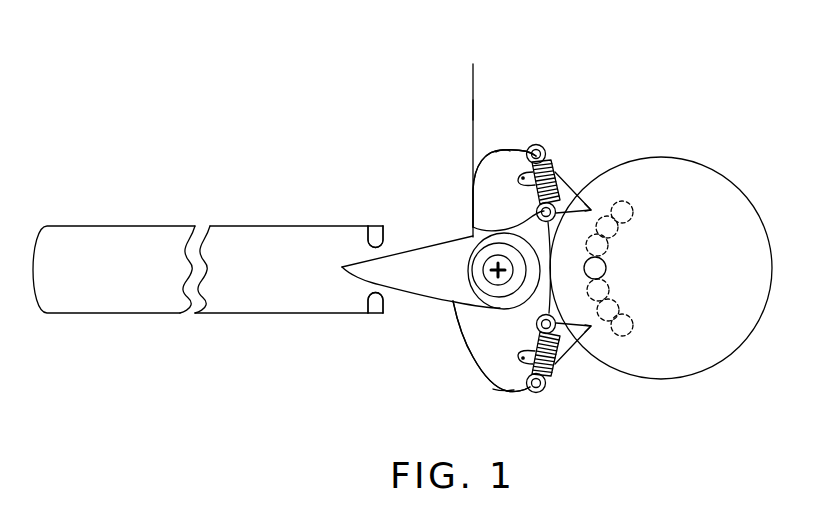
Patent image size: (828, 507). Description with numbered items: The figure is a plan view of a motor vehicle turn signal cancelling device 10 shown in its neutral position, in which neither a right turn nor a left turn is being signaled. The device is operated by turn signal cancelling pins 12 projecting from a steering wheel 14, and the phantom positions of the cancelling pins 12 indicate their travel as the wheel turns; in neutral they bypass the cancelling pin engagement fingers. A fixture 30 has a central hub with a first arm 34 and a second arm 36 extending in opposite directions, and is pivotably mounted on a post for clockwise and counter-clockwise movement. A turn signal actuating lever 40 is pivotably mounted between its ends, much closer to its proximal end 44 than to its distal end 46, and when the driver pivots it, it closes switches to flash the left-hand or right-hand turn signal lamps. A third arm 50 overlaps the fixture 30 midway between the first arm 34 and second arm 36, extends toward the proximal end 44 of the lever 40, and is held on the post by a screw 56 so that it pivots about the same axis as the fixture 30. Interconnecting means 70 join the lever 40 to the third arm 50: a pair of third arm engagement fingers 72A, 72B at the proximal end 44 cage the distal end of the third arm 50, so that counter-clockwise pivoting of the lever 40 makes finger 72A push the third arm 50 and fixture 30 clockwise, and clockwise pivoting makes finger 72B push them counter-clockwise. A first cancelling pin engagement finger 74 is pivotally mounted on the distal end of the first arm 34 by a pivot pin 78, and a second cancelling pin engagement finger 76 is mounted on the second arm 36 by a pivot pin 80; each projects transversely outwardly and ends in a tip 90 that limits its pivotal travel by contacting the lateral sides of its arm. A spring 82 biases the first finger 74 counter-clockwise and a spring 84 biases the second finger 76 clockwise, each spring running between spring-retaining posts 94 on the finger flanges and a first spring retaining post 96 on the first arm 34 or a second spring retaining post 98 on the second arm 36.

The turn signal cancelling device 10 is at (450, 113).
The turn signal cancelling pins 12 is at (622, 212).
The steering wheel 14 is at (715, 173).
The fixture 30 is at (467, 308).
The first arm 34 is at (472, 212).
The second arm 36 is at (477, 355).
The turn signal actuating lever 40 is at (253, 247).
The proximal end 44 is at (320, 293).
The distal end 46 is at (67, 250).
The third arm 50 is at (418, 249).
The screw 56 is at (481, 132).
The interconnecting means 70 is at (375, 203).
The third arm engagement finger 72A is at (370, 232).
The third arm engagement finger 72B is at (370, 306).
The first cancelling pin engagement finger 74 is at (575, 195).
The second cancelling pin engagement finger 76 is at (577, 337).
The pivot pin 78 is at (503, 150).
The pivot pin 80 is at (492, 386).
The spring 82 is at (560, 172).
The spring 84 is at (556, 368).
The tip 90 is at (591, 210).
The spring-retaining posts 94 is at (540, 218).
The first spring retaining post 96 is at (533, 147).
The second spring retaining post 98 is at (536, 393).